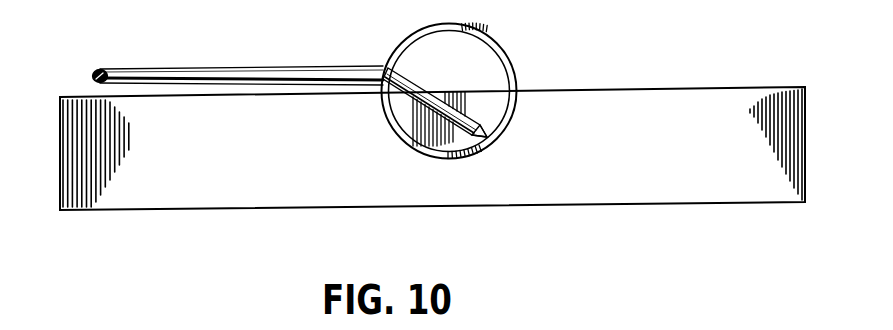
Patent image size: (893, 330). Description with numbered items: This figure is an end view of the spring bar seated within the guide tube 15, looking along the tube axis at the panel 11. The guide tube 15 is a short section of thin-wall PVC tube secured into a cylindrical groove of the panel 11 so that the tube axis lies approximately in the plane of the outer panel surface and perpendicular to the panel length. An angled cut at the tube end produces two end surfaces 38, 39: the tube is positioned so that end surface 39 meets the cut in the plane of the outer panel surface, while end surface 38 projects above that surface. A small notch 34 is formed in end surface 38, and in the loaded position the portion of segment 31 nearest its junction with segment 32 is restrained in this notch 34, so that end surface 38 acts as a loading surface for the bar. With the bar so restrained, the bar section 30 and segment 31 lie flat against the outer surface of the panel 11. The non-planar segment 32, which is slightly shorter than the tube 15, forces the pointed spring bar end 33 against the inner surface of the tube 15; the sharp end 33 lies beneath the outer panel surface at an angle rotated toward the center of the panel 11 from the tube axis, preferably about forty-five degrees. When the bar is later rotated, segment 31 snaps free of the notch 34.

The panel 11 is at (603, 88).
The guide tube 15 is at (398, 129).
The bar section 30 is at (103, 70).
The segment 31 is at (225, 70).
The segment 32 is at (412, 83).
The pointed spring bar end 33 is at (485, 138).
The notch 34 is at (386, 63).
The end surface 38 is at (406, 47).
The end surface 39 is at (517, 76).